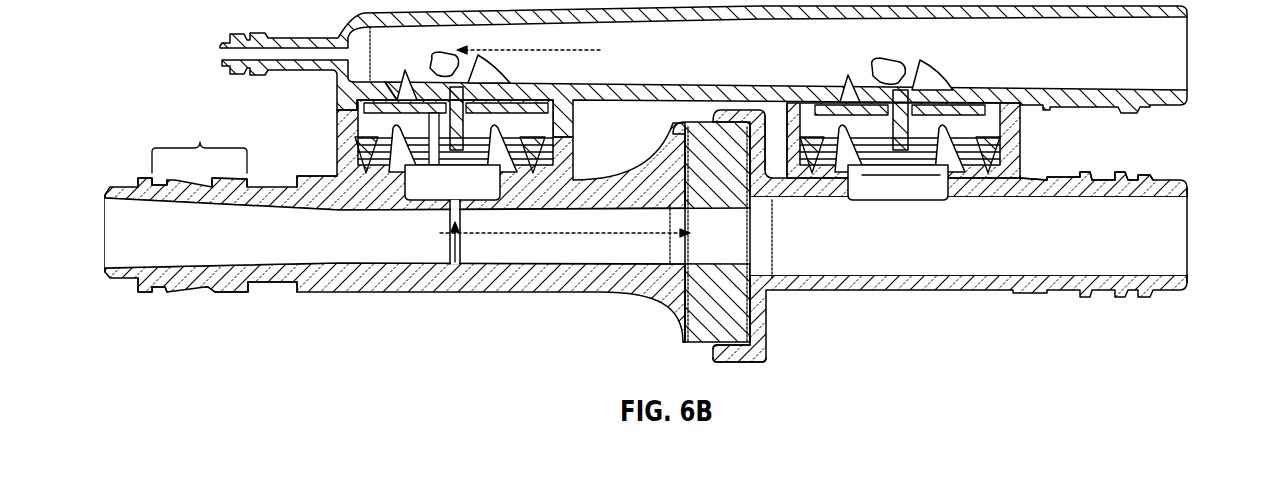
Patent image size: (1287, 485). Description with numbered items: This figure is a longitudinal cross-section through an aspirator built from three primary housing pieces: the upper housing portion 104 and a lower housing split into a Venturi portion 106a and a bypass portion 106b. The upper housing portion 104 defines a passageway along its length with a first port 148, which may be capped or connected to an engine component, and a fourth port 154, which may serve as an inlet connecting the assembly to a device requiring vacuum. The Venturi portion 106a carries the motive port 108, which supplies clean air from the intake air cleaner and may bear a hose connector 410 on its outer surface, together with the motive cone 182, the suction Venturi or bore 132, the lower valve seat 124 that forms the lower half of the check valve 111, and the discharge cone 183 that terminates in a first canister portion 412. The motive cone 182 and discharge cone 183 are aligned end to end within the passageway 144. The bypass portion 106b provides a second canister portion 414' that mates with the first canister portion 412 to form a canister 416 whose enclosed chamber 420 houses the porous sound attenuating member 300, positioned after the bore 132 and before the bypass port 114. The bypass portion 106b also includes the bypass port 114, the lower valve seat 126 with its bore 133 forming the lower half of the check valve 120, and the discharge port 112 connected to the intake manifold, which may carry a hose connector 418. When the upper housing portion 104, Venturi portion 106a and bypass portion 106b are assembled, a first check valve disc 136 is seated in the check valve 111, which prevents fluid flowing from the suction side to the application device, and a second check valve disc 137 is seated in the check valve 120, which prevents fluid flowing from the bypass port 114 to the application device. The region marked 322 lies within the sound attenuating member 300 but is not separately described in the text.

The upper housing portion 104 is at (352, 14).
The fourth port 154 is at (1190, 22).
The first port 148 is at (222, 52).
The first check valve disc 136 is at (545, 108).
The second check valve disc 137 is at (973, 100).
The lower valve seat 124 is at (300, 181).
The check valve 111 is at (336, 136).
The hose connector 410 is at (199, 141).
The check valve 120 is at (1018, 147).
The lower valve seat 126 is at (1022, 174).
The ring flange 322 is at (706, 210).
The hose connector 418 is at (1157, 183).
The enclosed chamber 420 is at (754, 272).
The bypass port 114 is at (927, 192).
The bore 133 is at (883, 182).
The motive port 108 is at (118, 253).
The discharge port 112 is at (1178, 258).
The first tapering portion (motive cone) 182 is at (148, 288).
The passageway 144 is at (250, 255).
The Venturi portion 106a is at (395, 285).
The bypass portion 106b is at (972, 285).
The bore (suction Venturi) 132 is at (456, 230).
The second tapering portion (discharge cone) 183 is at (595, 252).
The sound attenuating member 300 is at (718, 294).
The canister 416 is at (769, 300).
The first canister portion 412 is at (688, 340).
The second canister portion 414' is at (759, 370).